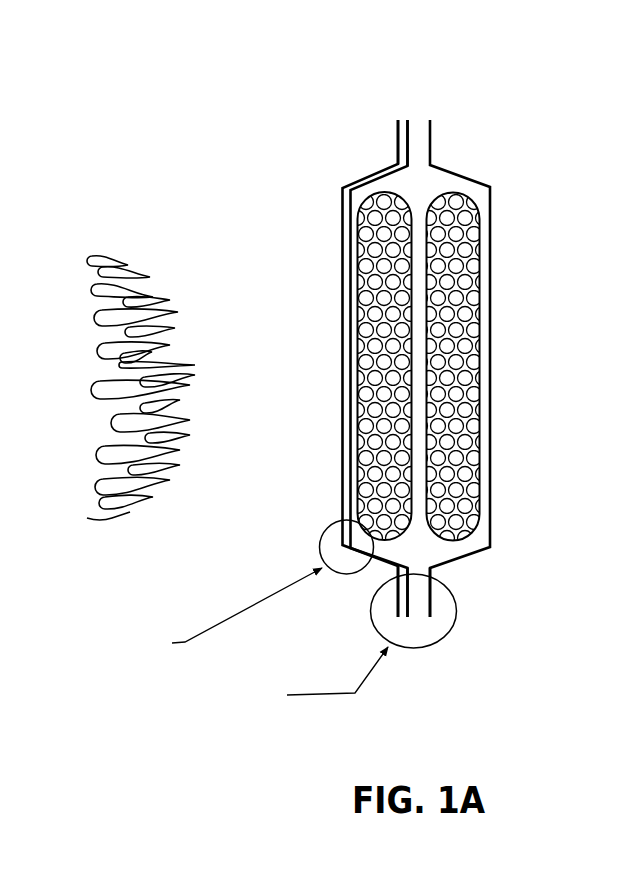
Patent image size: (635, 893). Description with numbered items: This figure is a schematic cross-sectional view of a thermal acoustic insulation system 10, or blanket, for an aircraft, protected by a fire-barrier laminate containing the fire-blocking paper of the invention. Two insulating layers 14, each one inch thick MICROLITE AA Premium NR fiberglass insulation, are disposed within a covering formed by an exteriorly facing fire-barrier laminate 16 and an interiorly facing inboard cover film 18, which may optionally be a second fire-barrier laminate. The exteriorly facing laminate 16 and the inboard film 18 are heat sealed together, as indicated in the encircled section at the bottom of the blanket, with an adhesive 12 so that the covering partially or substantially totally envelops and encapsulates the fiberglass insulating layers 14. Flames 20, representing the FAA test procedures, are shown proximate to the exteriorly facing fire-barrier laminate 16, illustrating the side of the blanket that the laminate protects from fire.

The thermal acoustic insulation system 10 is at (450, 67).
The adhesive 12 is at (415, 612).
The insulating layers 14 is at (358, 412).
The fire-barrier laminate 16 is at (388, 163).
The inboard cover film 18 is at (490, 547).
The flames 20 is at (155, 515).